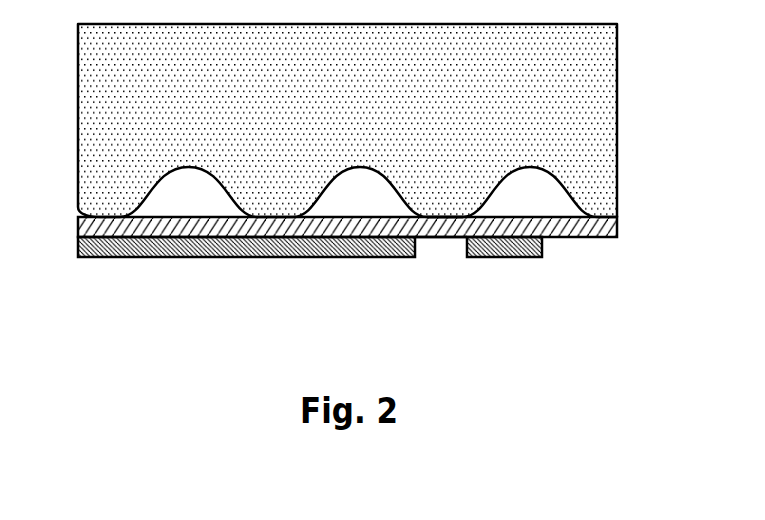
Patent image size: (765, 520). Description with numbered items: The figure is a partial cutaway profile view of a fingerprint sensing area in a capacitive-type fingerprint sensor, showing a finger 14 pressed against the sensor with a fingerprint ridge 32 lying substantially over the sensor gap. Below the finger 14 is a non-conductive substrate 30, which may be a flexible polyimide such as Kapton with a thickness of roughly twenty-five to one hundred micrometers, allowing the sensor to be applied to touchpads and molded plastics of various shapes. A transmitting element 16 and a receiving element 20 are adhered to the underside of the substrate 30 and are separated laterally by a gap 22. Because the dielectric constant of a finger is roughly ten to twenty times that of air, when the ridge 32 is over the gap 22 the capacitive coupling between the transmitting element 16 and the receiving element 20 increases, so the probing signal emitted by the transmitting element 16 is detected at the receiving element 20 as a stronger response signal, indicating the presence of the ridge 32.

The finger 14 is at (594, 67).
The transmitting element 16 is at (258, 258).
The receiving element 20 is at (507, 258).
The gap 22 is at (443, 258).
The substrate 30 is at (606, 228).
The fingerprint ridge 32 is at (443, 217).